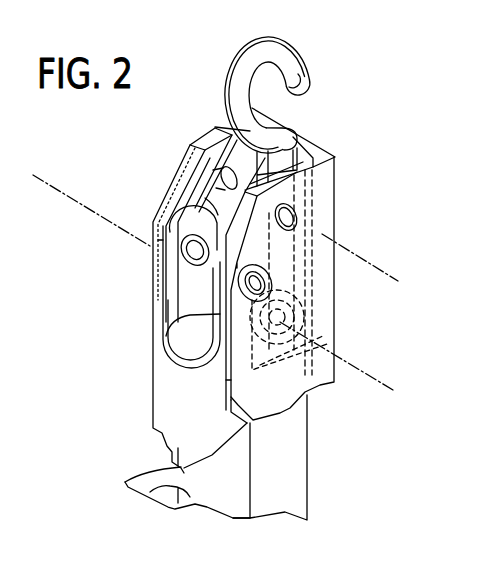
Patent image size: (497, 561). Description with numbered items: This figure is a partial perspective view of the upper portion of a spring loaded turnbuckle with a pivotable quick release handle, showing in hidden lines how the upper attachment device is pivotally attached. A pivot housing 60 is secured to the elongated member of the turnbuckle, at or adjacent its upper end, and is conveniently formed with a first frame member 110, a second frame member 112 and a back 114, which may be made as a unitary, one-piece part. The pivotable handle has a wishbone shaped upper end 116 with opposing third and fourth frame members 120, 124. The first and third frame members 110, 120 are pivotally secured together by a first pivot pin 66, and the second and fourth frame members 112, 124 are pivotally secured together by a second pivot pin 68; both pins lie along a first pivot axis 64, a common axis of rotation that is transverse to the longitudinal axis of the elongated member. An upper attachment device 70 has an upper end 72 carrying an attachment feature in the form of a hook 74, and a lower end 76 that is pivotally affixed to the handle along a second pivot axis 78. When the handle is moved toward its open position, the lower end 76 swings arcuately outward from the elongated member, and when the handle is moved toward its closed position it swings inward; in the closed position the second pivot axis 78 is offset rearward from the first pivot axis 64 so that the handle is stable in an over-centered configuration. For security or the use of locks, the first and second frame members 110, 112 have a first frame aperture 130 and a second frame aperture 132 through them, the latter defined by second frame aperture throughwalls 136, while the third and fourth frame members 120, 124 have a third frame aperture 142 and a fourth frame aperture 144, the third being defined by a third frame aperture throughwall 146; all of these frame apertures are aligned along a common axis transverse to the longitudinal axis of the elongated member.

The pivot housing 60 is at (336, 222).
The first pivot axis 64 is at (383, 270).
The first pivot pin 66 is at (296, 214).
The second pivot pin 68 is at (213, 124).
The upper attachment device 70 is at (284, 131).
The upper end 72 is at (288, 42).
The hook 74 is at (262, 80).
The lower end 76 is at (226, 382).
The second pivot axis 78 is at (384, 380).
The first frame member 110 is at (228, 410).
The second frame member 112 is at (158, 300).
The back 114 is at (317, 146).
The wishbone shaped upper end 116 is at (160, 378).
The third frame member 120 is at (166, 336).
The fourth frame member 124 is at (195, 177).
The first frame aperture 130 is at (285, 323).
The second frame aperture 132 is at (175, 230).
The second frame aperture throughwalls 136 is at (163, 245).
The third frame aperture 142 is at (235, 273).
The fourth frame aperture 144 is at (188, 217).
The third frame aperture throughwall 146 is at (229, 258).